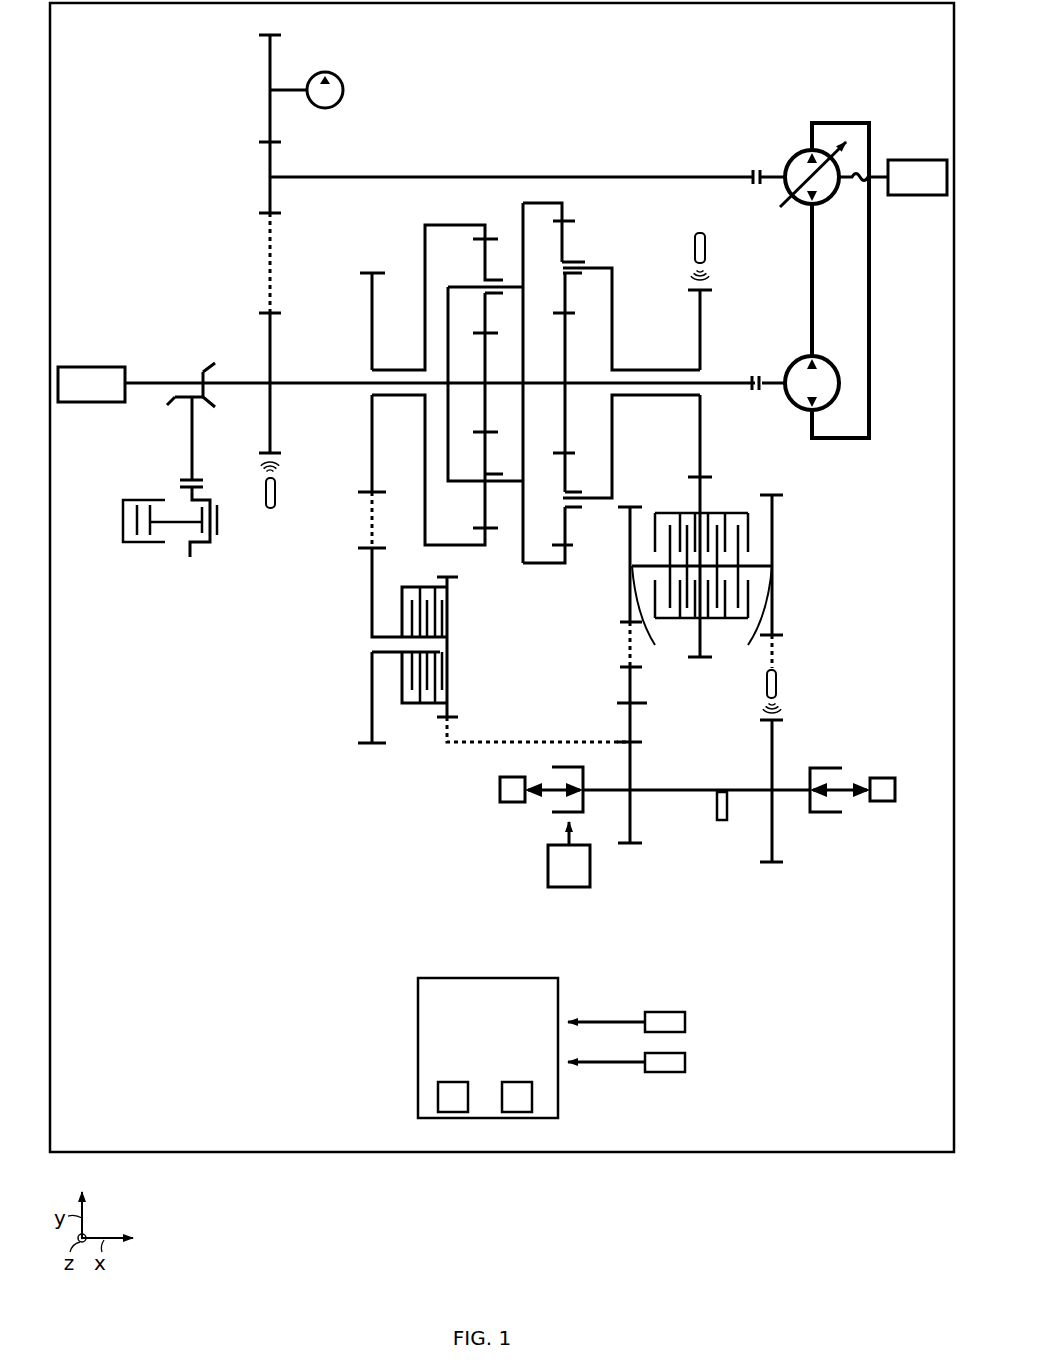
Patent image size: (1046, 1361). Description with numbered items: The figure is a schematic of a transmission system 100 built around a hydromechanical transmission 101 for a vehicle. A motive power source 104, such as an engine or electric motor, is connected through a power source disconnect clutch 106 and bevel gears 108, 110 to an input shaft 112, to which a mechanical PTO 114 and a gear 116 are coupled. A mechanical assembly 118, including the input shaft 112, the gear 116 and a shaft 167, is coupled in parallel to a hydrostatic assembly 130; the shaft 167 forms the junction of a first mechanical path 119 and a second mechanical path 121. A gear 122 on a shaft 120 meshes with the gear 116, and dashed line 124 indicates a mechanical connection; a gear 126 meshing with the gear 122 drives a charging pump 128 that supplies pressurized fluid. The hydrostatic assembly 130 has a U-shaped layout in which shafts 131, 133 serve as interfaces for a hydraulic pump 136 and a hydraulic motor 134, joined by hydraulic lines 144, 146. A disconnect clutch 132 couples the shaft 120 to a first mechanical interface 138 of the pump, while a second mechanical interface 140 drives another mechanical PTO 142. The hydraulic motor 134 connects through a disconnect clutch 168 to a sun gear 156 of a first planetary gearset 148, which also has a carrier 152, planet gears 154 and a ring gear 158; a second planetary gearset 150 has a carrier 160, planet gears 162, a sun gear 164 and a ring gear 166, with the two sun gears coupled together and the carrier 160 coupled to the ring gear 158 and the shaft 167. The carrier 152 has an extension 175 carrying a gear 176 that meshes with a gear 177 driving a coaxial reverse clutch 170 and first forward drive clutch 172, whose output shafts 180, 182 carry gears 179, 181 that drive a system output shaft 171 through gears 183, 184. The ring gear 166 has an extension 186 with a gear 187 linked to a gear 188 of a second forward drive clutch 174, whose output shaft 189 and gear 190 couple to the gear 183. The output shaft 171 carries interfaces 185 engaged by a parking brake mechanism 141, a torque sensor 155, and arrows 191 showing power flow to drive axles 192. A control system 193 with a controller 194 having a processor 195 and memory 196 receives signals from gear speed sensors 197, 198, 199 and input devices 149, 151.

The transmission system 100 is at (90, 46).
The hydromechanical transmission 101 is at (152, 116).
The motive power source 104 is at (190, 590).
The power source disconnect clutch 106 is at (180, 478).
The gear 108 is at (178, 398).
The gear 110 is at (203, 364).
The input shaft 112 is at (240, 382).
The mechanical PTO 114 is at (62, 367).
The gear 116 is at (272, 356).
The mechanical assembly 118 is at (210, 238).
The first mechanical path 119 is at (330, 322).
The shaft 120 is at (340, 177).
The second mechanical path 121 is at (340, 400).
The gear 122 is at (268, 160).
The dashed line 124 is at (268, 270).
The gear 126 is at (272, 42).
The charging pump 128 is at (343, 88).
The hydrostatic assembly 130 is at (894, 128).
The shaft 131 is at (786, 170).
The disconnect clutch 132 is at (757, 164).
The shaft 133 is at (795, 398).
The hydraulic motor 134 is at (798, 360).
The hydraulic pump 136 is at (800, 152).
The first mechanical interface 138 is at (778, 186).
The second mechanical interface 140 is at (840, 186).
The parking brake mechanism 141 is at (548, 867).
The mechanical PTO 142 is at (895, 197).
The hydraulic line 144 is at (850, 122).
The hydraulic line 146 is at (810, 285).
The first planetary gearset 148 is at (598, 215).
The input device 149 is at (663, 1072).
The second planetary gearset 150 is at (410, 215).
The input device 151 is at (663, 1012).
The carrier 152 is at (595, 266).
The planet gears 154 is at (556, 228).
The torque sensor 155 is at (716, 808).
The sun gear 156 is at (560, 368).
The ring gear 158 is at (553, 202).
The carrier 160 is at (480, 287).
The planet gears 162 is at (480, 240).
The sun gear 164 is at (485, 371).
The ring gear 166 is at (485, 224).
The shaft 167 is at (340, 381).
The disconnect clutch 168 is at (757, 370).
The reverse clutch 170 is at (657, 500).
The system output shaft 171 is at (665, 790).
The first forward drive clutch 172 is at (733, 500).
The second forward drive clutch 174 is at (405, 580).
The extension 175 is at (630, 370).
The gear 176 is at (698, 328).
The gear 177 is at (700, 497).
The gear 179 is at (628, 607).
The output shaft 180 is at (657, 619).
The gear 181 is at (777, 616).
The output shaft 182 is at (750, 619).
The gear 183 is at (634, 764).
The gear 184 is at (771, 758).
The interfaces 185 is at (540, 758).
The extension 186 is at (395, 368).
The gear 187 is at (372, 272).
The gear 188 is at (372, 594).
The output shaft 189 is at (372, 642).
The gear 190 is at (447, 712).
The arrows 191 is at (546, 795).
The drive axles 192 is at (500, 790).
The control system 193 is at (348, 1070).
The controller 194 is at (488, 1048).
The processor 195 is at (438, 1097).
The memory 196 is at (532, 1095).
The gear speed sensor 197 is at (270, 510).
The gear speed sensor 198 is at (780, 683).
The gear speed sensor 199 is at (708, 244).